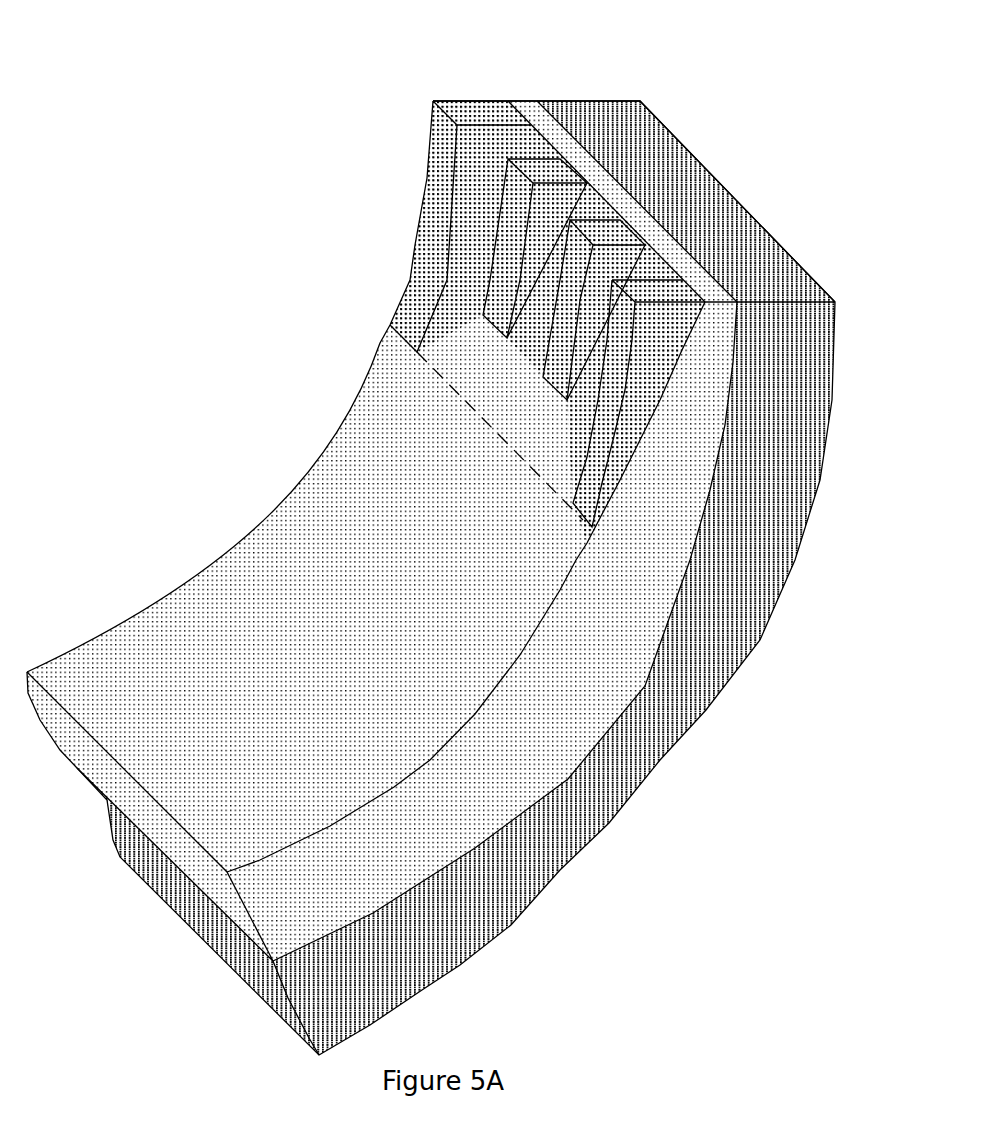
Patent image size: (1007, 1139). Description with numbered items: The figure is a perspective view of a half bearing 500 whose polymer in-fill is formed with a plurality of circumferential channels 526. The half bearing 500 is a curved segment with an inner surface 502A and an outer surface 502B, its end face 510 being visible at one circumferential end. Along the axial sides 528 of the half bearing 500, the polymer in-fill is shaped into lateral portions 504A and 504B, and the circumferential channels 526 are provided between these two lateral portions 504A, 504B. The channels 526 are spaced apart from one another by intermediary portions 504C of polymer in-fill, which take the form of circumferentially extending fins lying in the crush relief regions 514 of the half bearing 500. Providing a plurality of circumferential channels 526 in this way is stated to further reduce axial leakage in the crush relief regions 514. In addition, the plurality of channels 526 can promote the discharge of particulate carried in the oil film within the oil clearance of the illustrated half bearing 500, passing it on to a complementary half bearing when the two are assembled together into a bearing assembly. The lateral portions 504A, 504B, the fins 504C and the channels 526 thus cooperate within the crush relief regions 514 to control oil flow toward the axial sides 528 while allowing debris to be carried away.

The half bearing 500 is at (645, 929).
The inner surface 502A is at (335, 552).
The outer surface 502B is at (637, 779).
The lateral portion of polymer in-fill 504A is at (478, 118).
The lateral portion of polymer in-fill 504B is at (672, 290).
The intermediary portions of polymer in-fill 504C is at (557, 368).
The end face 510 is at (580, 125).
The crush relief regions 514 is at (640, 443).
The circumferential channels 526 is at (648, 265).
The axial sides 528 is at (208, 572).